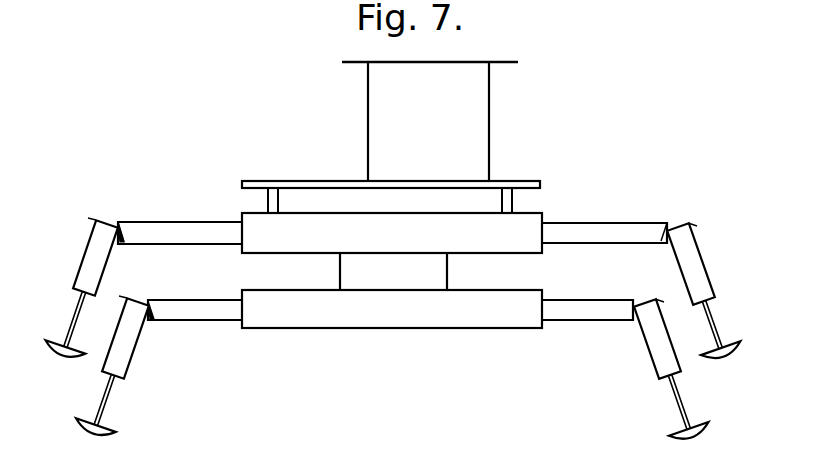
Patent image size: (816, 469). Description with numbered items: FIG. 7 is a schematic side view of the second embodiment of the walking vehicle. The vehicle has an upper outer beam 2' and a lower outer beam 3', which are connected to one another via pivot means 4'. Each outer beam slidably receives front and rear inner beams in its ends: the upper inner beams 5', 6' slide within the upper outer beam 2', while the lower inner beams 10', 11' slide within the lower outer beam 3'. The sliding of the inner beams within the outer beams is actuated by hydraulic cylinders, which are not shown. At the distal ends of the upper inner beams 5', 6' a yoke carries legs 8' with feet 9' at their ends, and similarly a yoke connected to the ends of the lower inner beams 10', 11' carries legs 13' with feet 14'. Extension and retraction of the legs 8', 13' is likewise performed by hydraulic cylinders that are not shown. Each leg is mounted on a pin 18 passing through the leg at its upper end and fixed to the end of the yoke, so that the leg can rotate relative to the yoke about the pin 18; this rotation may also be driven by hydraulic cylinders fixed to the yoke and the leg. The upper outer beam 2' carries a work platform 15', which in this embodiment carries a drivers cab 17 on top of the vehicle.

The drivers cab 17 is at (475, 106).
The work platform 15' is at (407, 180).
The upper outer beam 2' is at (407, 222).
The lower outer beam 3' is at (392, 334).
The pivot means 4' is at (393, 315).
The upper inner beam 5' is at (604, 216).
The upper inner beam 6' is at (180, 216).
The leg 8' is at (380, 269).
The foot 9' is at (397, 372).
The lower inner beam 10' is at (587, 332).
The lower inner beam 11' is at (195, 330).
The leg 13' is at (392, 362).
The foot 14' is at (414, 430).
The pin 18 is at (95, 230).